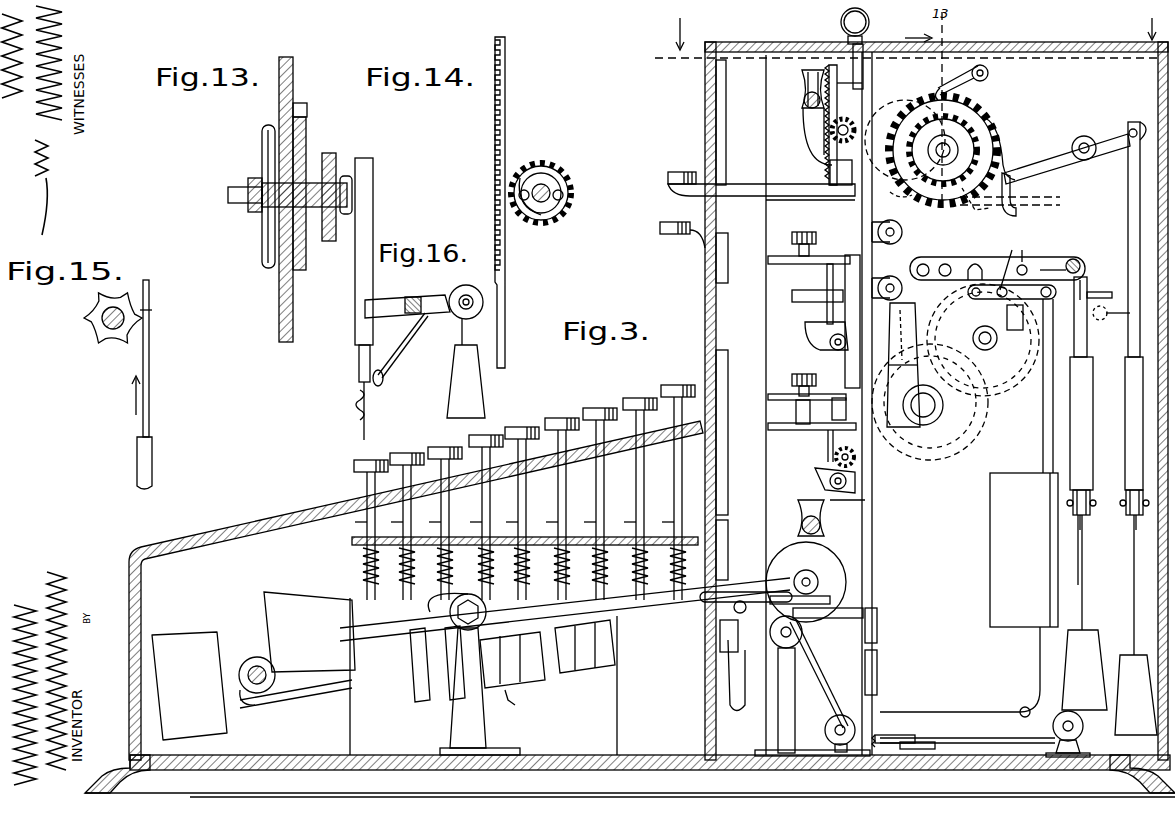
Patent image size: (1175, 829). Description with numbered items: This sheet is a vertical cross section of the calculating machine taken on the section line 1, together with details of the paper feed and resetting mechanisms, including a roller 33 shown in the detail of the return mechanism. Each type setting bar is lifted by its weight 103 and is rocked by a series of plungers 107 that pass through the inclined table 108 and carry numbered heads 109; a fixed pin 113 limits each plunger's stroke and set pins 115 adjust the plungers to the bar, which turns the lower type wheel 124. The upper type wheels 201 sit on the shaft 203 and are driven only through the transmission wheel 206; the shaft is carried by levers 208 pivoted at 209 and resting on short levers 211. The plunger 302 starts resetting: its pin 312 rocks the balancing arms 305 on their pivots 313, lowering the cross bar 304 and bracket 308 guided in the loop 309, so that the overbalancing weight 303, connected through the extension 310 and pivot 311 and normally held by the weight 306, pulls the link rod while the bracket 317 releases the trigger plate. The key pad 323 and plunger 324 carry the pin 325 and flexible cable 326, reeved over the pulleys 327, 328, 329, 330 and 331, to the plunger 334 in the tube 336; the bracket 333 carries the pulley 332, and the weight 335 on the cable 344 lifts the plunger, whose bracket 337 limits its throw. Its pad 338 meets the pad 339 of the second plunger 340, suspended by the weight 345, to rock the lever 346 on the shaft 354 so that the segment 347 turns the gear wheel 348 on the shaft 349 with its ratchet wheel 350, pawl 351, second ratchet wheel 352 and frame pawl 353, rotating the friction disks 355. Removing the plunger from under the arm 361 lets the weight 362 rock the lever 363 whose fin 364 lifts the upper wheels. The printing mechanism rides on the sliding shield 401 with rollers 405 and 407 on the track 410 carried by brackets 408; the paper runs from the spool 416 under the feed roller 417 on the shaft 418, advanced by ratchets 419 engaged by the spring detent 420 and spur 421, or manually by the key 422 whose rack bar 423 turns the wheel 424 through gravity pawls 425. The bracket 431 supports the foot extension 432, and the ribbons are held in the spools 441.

In FIG. 3, the section line 1 is at (897, 59).
In FIG. 16, the roller 33 is at (466, 285).
In FIG. 3, the weight 103 is at (188, 642).
In FIG. 3, the plungers 107 is at (604, 472).
In FIG. 3, the inclined table 108 is at (246, 530).
In FIG. 3, the heads 109 is at (602, 406).
In FIG. 3, the fixed pin 113 is at (548, 528).
In FIG. 3, the set pins 115 is at (550, 696).
In FIG. 3, the type wheel 124 is at (960, 426).
In FIG. 3, the upper type wheels 201 is at (976, 196).
In FIG. 3, the shaft 203 is at (920, 275).
In FIG. 3, the transmission wheel 206 is at (1005, 370).
In FIG. 3, the levers 208 is at (910, 255).
In FIG. 3, the pivot 209 is at (1038, 249).
In FIG. 3, the short levers 211 is at (1016, 262).
In FIG. 3, the plunger 302 is at (728, 533).
In FIG. 15, the plunger 302 is at (150, 454).
In FIG. 3, the overbalancing weight 303 is at (990, 566).
In FIG. 3, the cross bar 304 is at (732, 626).
In FIG. 3, the balancing arms 305 is at (690, 604).
In FIG. 3, the overbalancing weight 306 is at (278, 605).
In FIG. 3, the bracket 308 is at (755, 572).
In FIG. 3, the loop 309 is at (878, 650).
In FIG. 3, the extension 310 is at (955, 710).
In FIG. 3, the pivot 311 is at (1025, 706).
In FIG. 3, the pin 312 is at (772, 588).
In FIG. 3, the pivots 313 is at (452, 622).
In FIG. 3, the bracket 317 is at (1015, 330).
In FIG. 3, the key pad 323 is at (660, 228).
In FIG. 3, the plunger 324 is at (722, 350).
In FIG. 3, the pin 325 is at (735, 712).
In FIG. 3, the flexible cable 326 is at (816, 670).
In FIG. 3, the pulley 327 is at (792, 700).
In FIG. 3, the pulley 328 is at (827, 733).
In FIG. 3, the pulley 329 is at (906, 733).
In FIG. 3, the pulley 330 is at (948, 743).
In FIG. 3, the pulley 331 is at (1053, 728).
In FIG. 3, the pulley 332 is at (1108, 504).
In FIG. 3, the bracket 333 is at (1091, 522).
In FIG. 16, the bracket 333 is at (398, 300).
In FIG. 3, the plunger 334 is at (1088, 352).
In FIG. 13, the plunger 334 is at (373, 170).
In FIG. 16, the plunger 334 is at (405, 354).
In FIG. 3, the weight 335 is at (1086, 640).
In FIG. 16, the weight 335 is at (470, 388).
In FIG. 3, the tube 336 is at (1090, 416).
In FIG. 13, the tube 336 is at (355, 265).
In FIG. 3, the bracket 337 is at (1090, 276).
In FIG. 3, the pad 338 is at (1106, 287).
In FIG. 3, the pad 339 is at (1110, 320).
In FIG. 3, the second plunger 340 is at (1128, 224).
In FIG. 3, the cable 344 is at (1083, 560).
In FIG. 3, the weight 345 is at (1128, 725).
In FIG. 3, the rocking lever 346 is at (1048, 160).
In FIG. 3, the segment 347 is at (1128, 462).
In FIG. 3, the gear wheel 348 is at (975, 138).
In FIG. 13, the gear wheel 348 is at (336, 162).
In FIG. 3, the shaft 349 is at (955, 138).
In FIG. 13, the shaft 349 is at (228, 194).
In FIG. 3, the ratchet wheel 350 is at (908, 178).
In FIG. 13, the ratchet wheel 350 is at (310, 142).
In FIG. 3, the pawl 351 is at (936, 88).
In FIG. 3, the second ratchet wheel 352 is at (1000, 152).
In FIG. 13, the second ratchet wheel 352 is at (293, 280).
In FIG. 3, the pawl 353 is at (972, 73).
In FIG. 13, the pawl 353 is at (300, 116).
In FIG. 3, the shaft 354 is at (1085, 160).
In FIG. 13, the friction disks 355 is at (262, 152).
In FIG. 3, the arm 361 is at (1048, 275).
In FIG. 3, the weight 362 is at (1073, 258).
In FIG. 3, the lever 363 is at (992, 262).
In FIG. 3, the fin 364 is at (968, 292).
In FIG. 3, the sliding shield 401 is at (866, 530).
In FIG. 3, the rollers 405 is at (798, 526).
In FIG. 3, the rollers 407 is at (803, 86).
In FIG. 3, the brackets 408 is at (810, 143).
In FIG. 3, the track 410 is at (805, 106).
In FIG. 3, the paper spool 416 is at (830, 566).
In FIG. 3, the feed roller 417 is at (841, 22).
In FIG. 14, the shaft 418 is at (546, 184).
In FIG. 15, the shaft 418 is at (100, 312).
In FIG. 15, the ratchets 419 is at (86, 326).
In FIG. 15, the spring detent 420 is at (149, 346).
In FIG. 15, the spur 421 is at (152, 310).
In FIG. 3, the key 422 is at (670, 172).
In FIG. 3, the rack bar 423 is at (828, 168).
In FIG. 14, the rack bar 423 is at (506, 300).
In FIG. 3, the wheel 424 is at (906, 122).
In FIG. 14, the wheel 424 is at (545, 222).
In FIG. 14, the pawls 425 is at (512, 184).
In FIG. 3, the bracket 431 is at (815, 478).
In FIG. 3, the foot extension 432 is at (835, 462).
In FIG. 3, the spools 441 is at (808, 276).